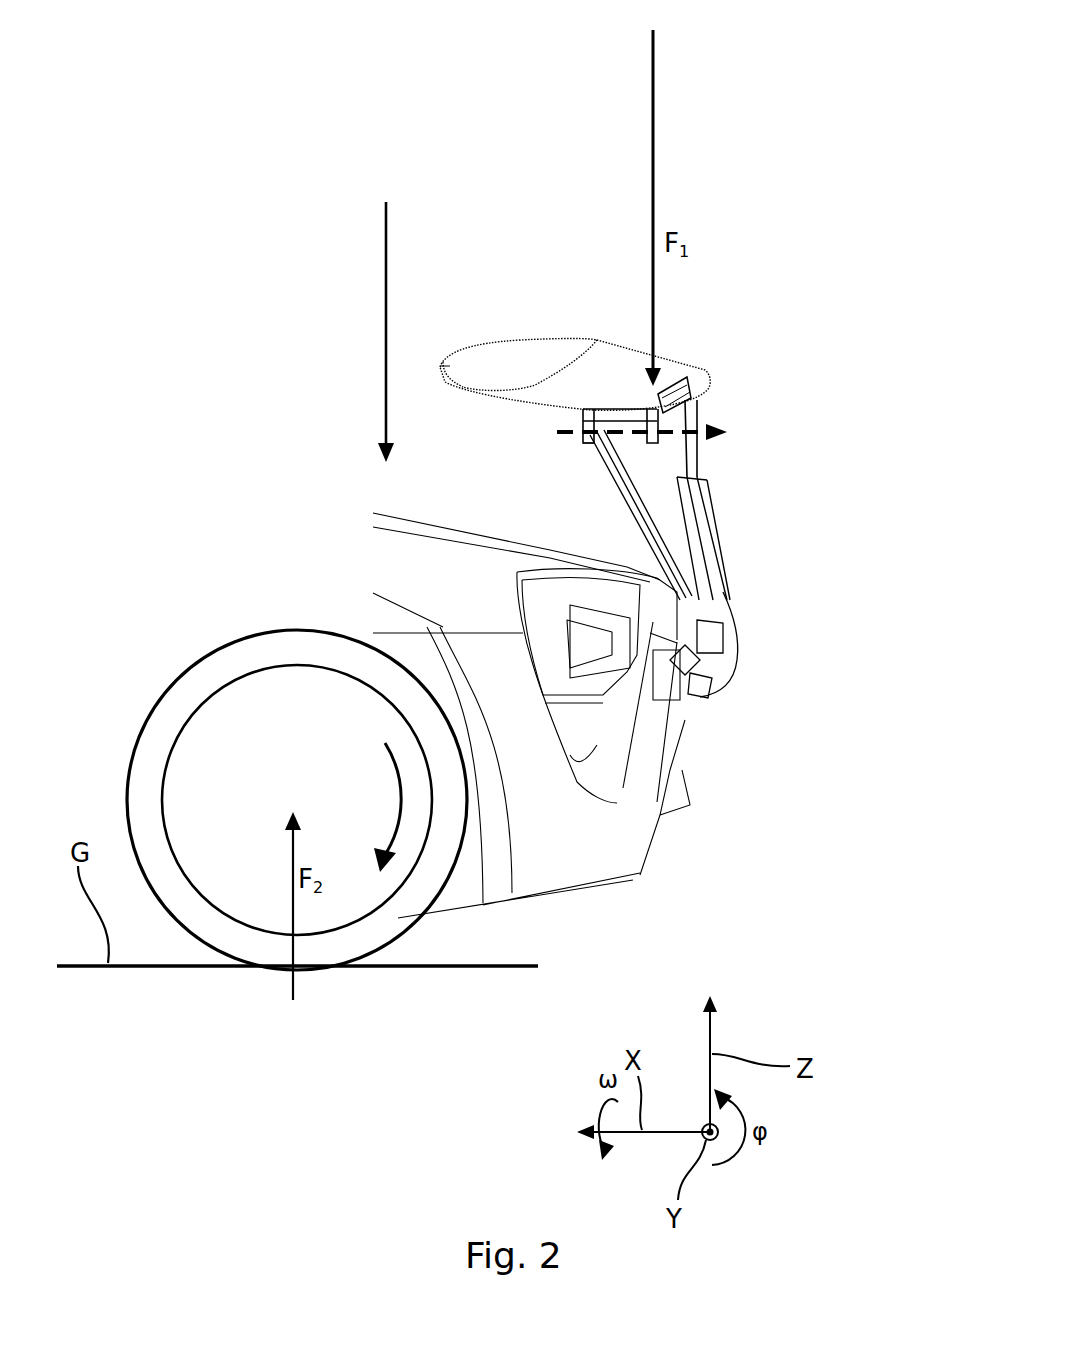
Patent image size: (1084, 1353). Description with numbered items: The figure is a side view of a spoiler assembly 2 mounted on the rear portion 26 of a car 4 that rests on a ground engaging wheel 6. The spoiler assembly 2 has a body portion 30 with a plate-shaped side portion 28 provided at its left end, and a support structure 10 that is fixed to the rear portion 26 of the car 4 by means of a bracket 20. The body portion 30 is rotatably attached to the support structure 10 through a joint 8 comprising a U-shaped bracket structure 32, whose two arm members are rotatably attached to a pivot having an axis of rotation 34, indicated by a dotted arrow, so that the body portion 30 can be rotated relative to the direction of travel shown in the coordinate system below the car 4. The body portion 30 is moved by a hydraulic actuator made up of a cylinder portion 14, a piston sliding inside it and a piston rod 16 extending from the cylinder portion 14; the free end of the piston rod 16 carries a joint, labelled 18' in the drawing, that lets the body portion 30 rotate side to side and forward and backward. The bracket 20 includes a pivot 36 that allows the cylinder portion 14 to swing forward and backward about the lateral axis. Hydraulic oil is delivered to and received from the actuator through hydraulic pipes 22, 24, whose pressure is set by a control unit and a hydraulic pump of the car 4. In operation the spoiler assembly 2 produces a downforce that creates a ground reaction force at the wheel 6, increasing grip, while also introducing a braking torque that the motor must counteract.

The spoiler assembly 2 is at (465, 328).
The car 4 is at (680, 862).
The ground engaging wheel 6 is at (187, 926).
The joint 8 is at (568, 452).
The support structure 10 is at (657, 473).
The cylinder portion 14 is at (712, 533).
The piston rod 16 is at (693, 457).
The bracket 18' is at (702, 347).
The bracket 20 is at (727, 632).
The hydraulic pipe 22 is at (695, 667).
The hydraulic pipe 24 is at (673, 678).
The rear portion of the car 26 is at (770, 660).
The plate-shaped side portion 28 is at (453, 363).
The body portion 30 is at (613, 357).
The U-shaped bracket structure 32 is at (578, 417).
The axis of rotation 34 is at (690, 432).
The pivot 36 is at (718, 645).